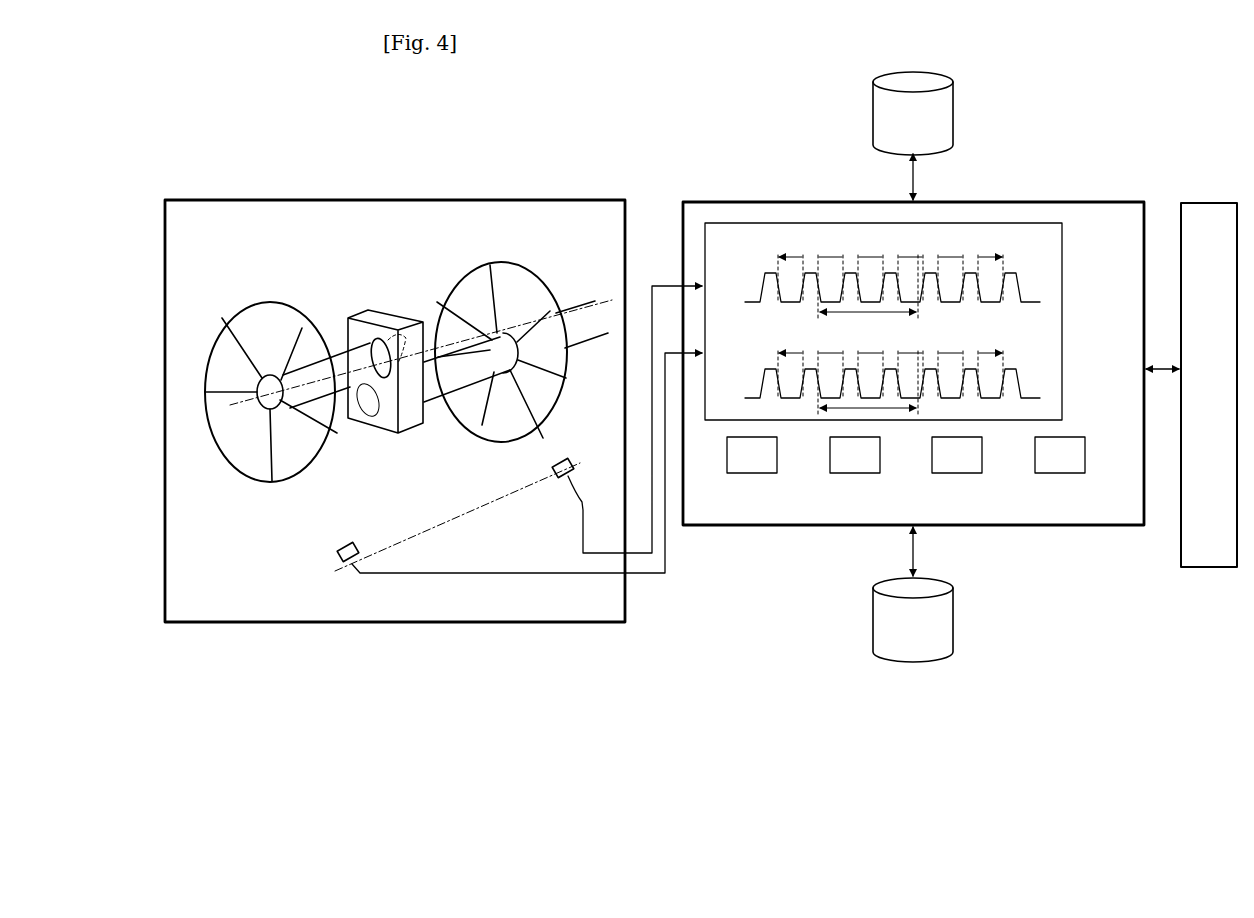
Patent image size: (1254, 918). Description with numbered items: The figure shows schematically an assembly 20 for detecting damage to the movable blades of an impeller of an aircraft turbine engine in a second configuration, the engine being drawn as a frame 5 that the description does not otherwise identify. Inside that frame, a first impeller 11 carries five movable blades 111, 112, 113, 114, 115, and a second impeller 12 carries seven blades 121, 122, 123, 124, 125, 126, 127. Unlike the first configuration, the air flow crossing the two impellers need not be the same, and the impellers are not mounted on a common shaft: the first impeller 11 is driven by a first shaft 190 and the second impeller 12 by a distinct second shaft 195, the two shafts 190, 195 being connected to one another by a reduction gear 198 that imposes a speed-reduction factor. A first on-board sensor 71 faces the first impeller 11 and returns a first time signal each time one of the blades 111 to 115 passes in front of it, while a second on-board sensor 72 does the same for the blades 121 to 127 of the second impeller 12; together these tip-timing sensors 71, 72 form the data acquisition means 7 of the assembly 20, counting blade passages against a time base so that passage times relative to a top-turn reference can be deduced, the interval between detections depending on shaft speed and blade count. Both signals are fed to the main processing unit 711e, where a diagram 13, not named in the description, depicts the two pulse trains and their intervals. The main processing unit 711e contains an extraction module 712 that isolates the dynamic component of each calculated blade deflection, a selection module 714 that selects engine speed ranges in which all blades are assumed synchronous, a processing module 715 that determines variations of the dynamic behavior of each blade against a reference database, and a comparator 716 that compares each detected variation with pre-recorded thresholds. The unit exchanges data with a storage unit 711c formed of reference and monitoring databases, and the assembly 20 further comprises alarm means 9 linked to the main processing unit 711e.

The vehicle / measurement enclosure 5 is at (397, 623).
The assembly for detecting damage 20 is at (367, 142).
The first impeller 11 is at (271, 394).
The movable blade 111 is at (214, 349).
The movable blade 112 is at (253, 322).
The movable blade 113 is at (323, 414).
The movable blade 114 is at (284, 470).
The movable blade 115 is at (226, 432).
The first shaft 190 is at (332, 351).
The reduction gear 198 is at (374, 317).
The second shaft 195 is at (584, 312).
The second impeller 12 is at (509, 352).
The blade 121 is at (467, 283).
The blade 122 is at (522, 290).
The blade 123 is at (568, 366).
The blade 124 is at (556, 412).
The blade 125 is at (505, 441).
The blade 126 is at (463, 406).
The blade 127 is at (440, 321).
The acquisition means 7 is at (460, 518).
The first sensor 71 is at (343, 573).
The second sensor 72 is at (572, 468).
The main processing unit 711e is at (913, 347).
The signal diagram 13 is at (1064, 321).
The extraction module 712 is at (752, 455).
The selection module 714 is at (855, 455).
The processing module 715 is at (957, 455).
The comparator 716 is at (1060, 455).
The storage unit 711c is at (953, 108).
The alarm means 9 is at (1210, 202).